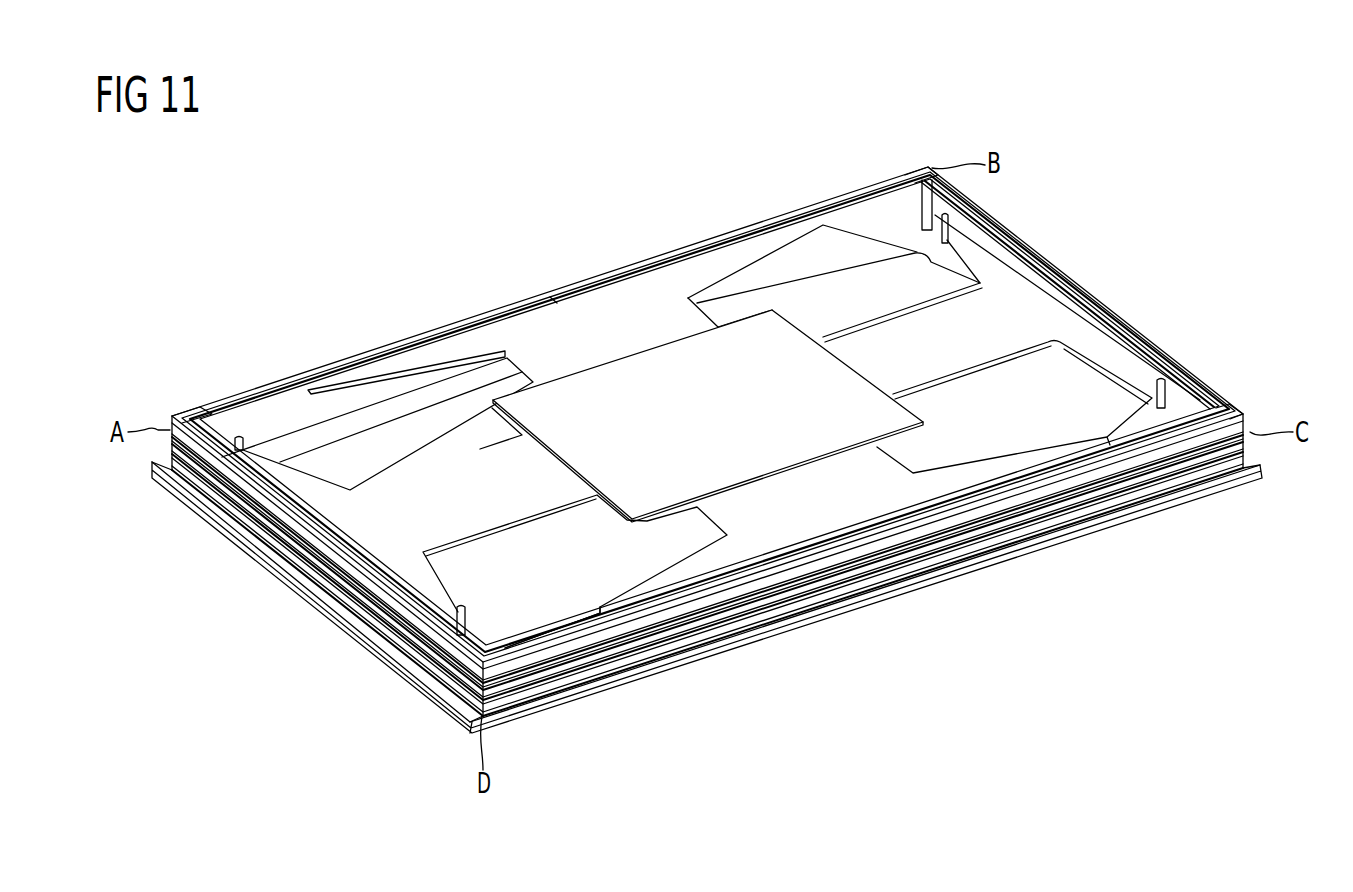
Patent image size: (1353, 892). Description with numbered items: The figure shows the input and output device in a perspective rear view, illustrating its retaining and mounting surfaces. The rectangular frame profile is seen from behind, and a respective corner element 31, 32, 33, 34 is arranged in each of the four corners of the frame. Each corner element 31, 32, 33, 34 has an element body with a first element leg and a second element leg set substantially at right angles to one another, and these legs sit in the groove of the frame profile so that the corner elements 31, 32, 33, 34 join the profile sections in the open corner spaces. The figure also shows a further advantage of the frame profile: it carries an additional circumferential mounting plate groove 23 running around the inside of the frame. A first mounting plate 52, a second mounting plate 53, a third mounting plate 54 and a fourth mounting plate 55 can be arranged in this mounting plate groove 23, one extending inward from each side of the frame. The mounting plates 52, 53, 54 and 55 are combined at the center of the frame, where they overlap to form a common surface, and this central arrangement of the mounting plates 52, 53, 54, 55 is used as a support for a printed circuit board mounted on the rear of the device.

The mounting plate groove 23 is at (290, 400).
The corner element 31 is at (207, 410).
The corner element 32 is at (928, 166).
The corner element 33 is at (1228, 410).
The corner element 34 is at (505, 648).
The first mounting plate 52 is at (618, 318).
The second mounting plate 53 is at (1010, 315).
The third mounting plate 54 is at (825, 513).
The fourth mounting plate 55 is at (400, 521).